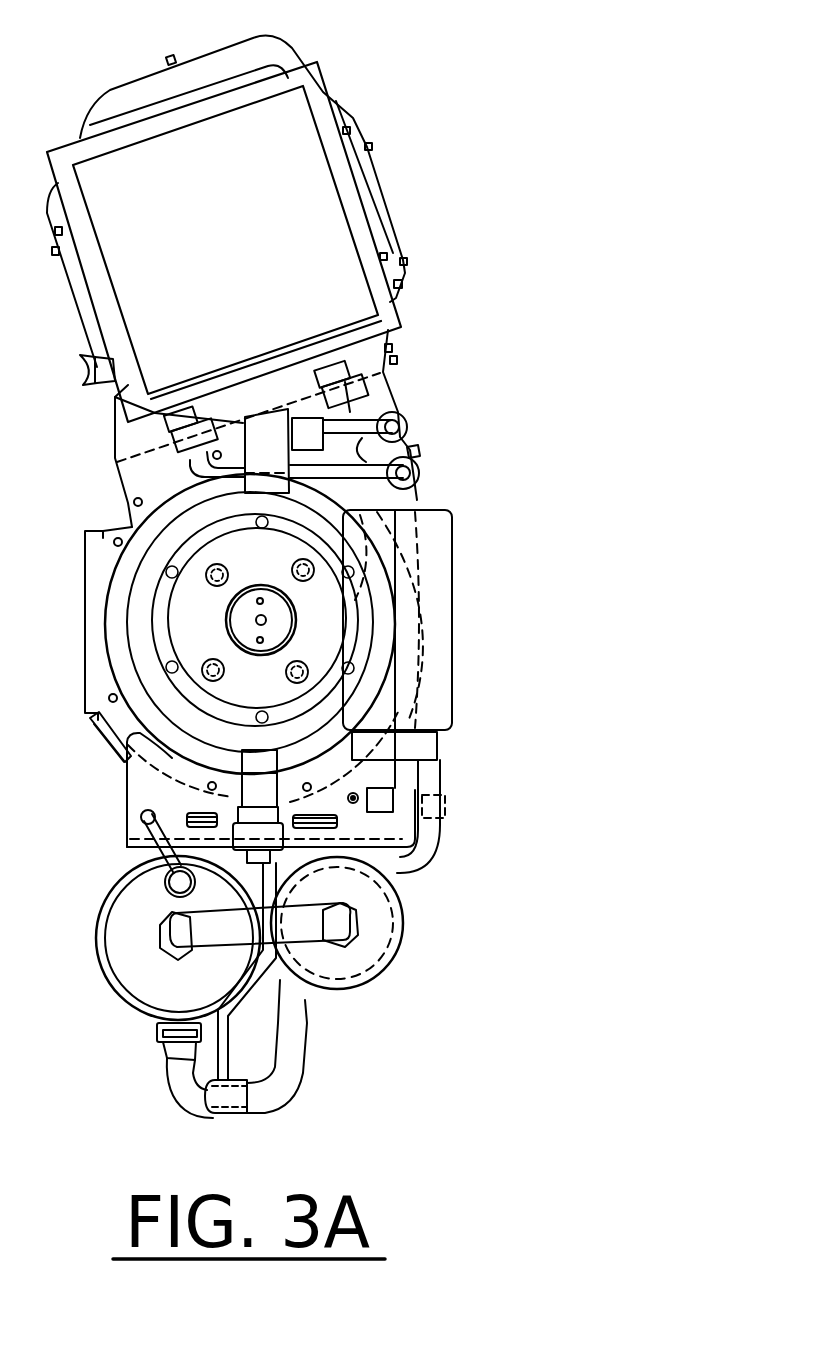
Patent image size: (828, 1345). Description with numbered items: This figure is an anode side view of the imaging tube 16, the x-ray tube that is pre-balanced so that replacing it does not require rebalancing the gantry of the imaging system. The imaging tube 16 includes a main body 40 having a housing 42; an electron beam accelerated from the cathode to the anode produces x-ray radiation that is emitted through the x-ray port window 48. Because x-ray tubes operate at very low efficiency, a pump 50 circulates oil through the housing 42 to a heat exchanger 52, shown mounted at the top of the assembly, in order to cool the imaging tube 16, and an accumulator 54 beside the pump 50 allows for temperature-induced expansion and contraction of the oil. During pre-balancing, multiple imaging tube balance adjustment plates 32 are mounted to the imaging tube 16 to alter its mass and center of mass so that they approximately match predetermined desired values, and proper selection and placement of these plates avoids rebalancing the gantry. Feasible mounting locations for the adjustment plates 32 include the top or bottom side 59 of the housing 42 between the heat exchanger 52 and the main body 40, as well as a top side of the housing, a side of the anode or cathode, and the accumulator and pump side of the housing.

The imaging tube 16 is at (335, 63).
The heat exchanger 52 is at (397, 303).
The top or bottom side of the housing 59 is at (400, 395).
The imaging tube balance adjustment plates 32 is at (365, 608).
The x-ray port window 48 is at (82, 632).
The main body 40 is at (102, 733).
The housing 42 is at (138, 793).
The accumulator 54 is at (133, 1008).
The pump 50 is at (380, 978).